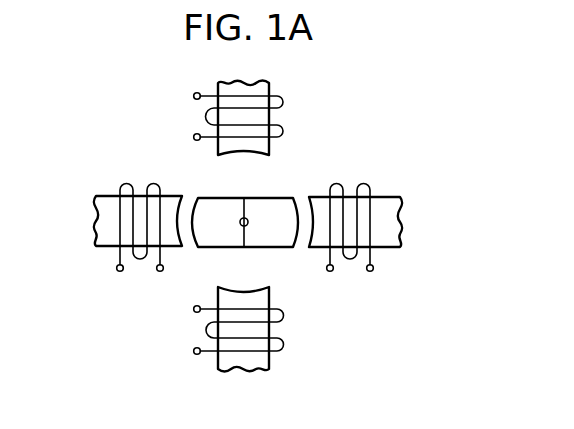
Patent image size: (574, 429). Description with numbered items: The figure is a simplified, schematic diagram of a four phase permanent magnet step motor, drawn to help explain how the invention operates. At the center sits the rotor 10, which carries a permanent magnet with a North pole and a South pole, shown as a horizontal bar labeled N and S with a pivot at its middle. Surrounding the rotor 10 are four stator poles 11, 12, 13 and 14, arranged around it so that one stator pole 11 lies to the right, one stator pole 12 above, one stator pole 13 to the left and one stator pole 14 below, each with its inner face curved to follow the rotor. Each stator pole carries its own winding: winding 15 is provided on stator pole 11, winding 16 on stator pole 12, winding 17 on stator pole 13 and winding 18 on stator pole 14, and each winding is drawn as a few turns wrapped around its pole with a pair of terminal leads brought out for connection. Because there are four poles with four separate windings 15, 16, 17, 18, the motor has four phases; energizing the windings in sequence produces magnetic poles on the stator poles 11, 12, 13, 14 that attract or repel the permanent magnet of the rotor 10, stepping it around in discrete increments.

The rotor 10 is at (254, 203).
The stator pole 11 is at (386, 222).
The stator pole 12 is at (262, 92).
The stator pole 13 is at (102, 222).
The stator pole 14 is at (249, 360).
The winding 15 is at (367, 182).
The winding 16 is at (204, 116).
The winding 17 is at (139, 262).
The winding 18 is at (283, 316).